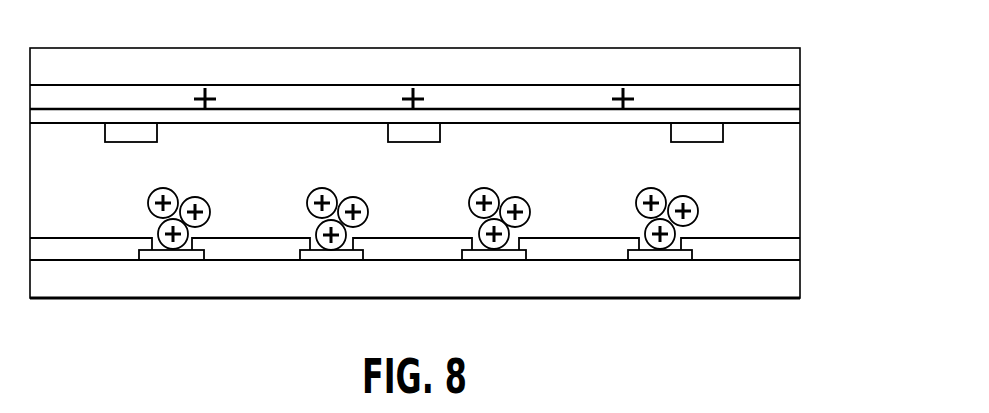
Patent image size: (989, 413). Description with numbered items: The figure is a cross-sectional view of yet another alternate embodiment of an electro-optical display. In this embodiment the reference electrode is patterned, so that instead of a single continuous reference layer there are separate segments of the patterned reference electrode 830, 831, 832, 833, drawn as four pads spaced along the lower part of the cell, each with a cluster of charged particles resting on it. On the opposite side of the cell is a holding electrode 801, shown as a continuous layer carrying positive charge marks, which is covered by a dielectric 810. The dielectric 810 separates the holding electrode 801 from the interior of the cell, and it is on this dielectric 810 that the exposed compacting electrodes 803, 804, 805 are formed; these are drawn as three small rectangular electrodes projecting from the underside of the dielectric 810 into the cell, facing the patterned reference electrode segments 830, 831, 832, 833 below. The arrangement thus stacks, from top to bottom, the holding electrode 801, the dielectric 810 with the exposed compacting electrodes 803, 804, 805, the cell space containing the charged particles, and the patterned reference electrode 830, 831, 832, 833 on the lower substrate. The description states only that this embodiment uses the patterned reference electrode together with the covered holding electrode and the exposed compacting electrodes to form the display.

The holding electrode 801 is at (790, 97).
The dielectric 810 is at (788, 116).
The compacting electrode 803 is at (127, 134).
The compacting electrode 804 is at (405, 133).
The compacting electrode 805 is at (698, 133).
The patterned reference electrode 830 is at (675, 255).
The patterned reference electrode 831 is at (505, 255).
The patterned reference electrode 832 is at (308, 255).
The patterned reference electrode 833 is at (147, 255).